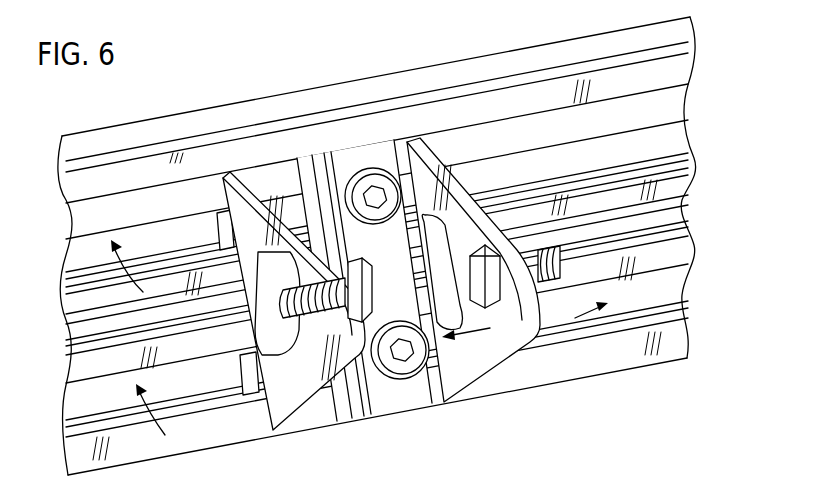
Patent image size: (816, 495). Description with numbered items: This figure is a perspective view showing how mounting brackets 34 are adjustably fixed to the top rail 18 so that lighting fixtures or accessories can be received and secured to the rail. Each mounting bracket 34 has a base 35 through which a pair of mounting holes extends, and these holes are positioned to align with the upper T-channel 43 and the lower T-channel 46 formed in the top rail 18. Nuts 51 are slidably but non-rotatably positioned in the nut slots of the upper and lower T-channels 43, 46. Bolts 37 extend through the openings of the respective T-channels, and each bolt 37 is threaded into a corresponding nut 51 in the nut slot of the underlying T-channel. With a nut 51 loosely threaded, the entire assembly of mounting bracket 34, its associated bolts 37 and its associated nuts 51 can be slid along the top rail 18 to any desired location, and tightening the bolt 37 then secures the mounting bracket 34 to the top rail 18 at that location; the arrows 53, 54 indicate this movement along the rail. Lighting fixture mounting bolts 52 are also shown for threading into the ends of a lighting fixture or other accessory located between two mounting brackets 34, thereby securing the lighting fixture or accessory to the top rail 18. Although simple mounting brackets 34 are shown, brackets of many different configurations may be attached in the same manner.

The top rail 18 is at (352, 70).
The mounting bracket 34 is at (268, 425).
The base 35 is at (322, 412).
The bolt 37 is at (375, 186).
The upper T-channel 43 is at (137, 271).
The lower T-channel 46 is at (163, 414).
The nut 51 is at (222, 227).
The lighting fixture mounting bolt 52 is at (371, 292).
The third direction arrow 53 is at (577, 318).
The fourth direction arrow 54 is at (463, 338).